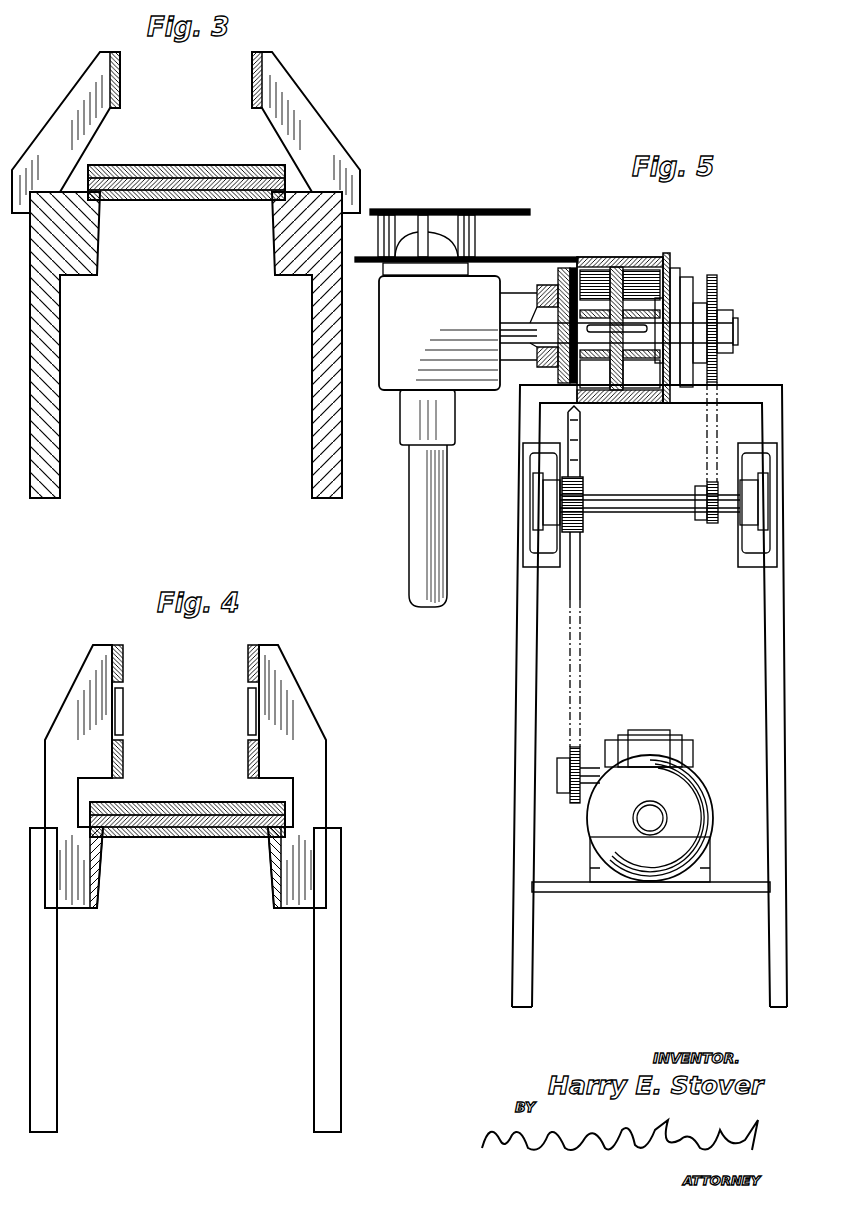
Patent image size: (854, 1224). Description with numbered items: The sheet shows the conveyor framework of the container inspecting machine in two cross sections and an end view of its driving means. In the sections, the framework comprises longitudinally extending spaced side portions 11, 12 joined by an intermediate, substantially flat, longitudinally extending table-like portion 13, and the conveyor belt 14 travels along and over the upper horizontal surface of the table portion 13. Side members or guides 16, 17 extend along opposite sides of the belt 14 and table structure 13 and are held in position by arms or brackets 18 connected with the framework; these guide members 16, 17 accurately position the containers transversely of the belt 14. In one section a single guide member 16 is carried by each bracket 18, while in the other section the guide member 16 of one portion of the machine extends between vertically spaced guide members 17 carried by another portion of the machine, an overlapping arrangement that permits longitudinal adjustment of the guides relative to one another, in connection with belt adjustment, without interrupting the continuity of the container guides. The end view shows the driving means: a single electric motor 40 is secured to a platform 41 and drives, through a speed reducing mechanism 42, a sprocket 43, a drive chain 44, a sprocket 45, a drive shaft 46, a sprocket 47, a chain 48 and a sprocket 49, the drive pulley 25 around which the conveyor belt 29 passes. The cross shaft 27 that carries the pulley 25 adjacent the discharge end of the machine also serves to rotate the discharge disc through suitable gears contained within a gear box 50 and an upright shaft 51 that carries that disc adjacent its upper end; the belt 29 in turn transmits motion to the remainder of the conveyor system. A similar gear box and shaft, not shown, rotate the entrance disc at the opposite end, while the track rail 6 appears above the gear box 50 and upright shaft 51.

In FIG. 5, the track rail 6 is at (518, 247).
In FIG. 3, the side portion 11 is at (317, 374).
In FIG. 4, the side portion 11 is at (333, 961).
In FIG. 3, the side portion 12 is at (47, 444).
In FIG. 4, the side portion 12 is at (45, 989).
In FIG. 3, the table-like portion 13 is at (168, 214).
In FIG. 4, the table-like portion 13 is at (185, 848).
In FIG. 3, the conveyor belt 14 is at (138, 150).
In FIG. 4, the conveyor belt 14 is at (187, 787).
In FIG. 3, the guide member 16 is at (122, 80).
In FIG. 4, the guide member 16 is at (123, 712).
In FIG. 4, the guide member 17 is at (123, 668).
In FIG. 3, the bracket 18 is at (60, 107).
In FIG. 4, the bracket 18 is at (58, 722).
In FIG. 5, the drive pulley 25 is at (665, 253).
In FIG. 5, the cross shaft 27 is at (738, 328).
In FIG. 5, the conveyor belt 29 is at (597, 258).
In FIG. 5, the electric motor 40 is at (690, 802).
In FIG. 5, the platform 41 is at (570, 892).
In FIG. 5, the speed reducing mechanism 42 is at (623, 733).
In FIG. 5, the sprocket 43 is at (572, 803).
In FIG. 5, the drive chain 44 is at (580, 680).
In FIG. 5, the sprocket 45 is at (582, 553).
In FIG. 5, the drive shaft 46 is at (637, 513).
In FIG. 5, the sprocket 47 is at (710, 528).
In FIG. 5, the chain 48 is at (707, 430).
In FIG. 5, the sprocket 49 is at (717, 285).
In FIG. 5, the gear box 50 is at (439, 326).
In FIG. 5, the upright shaft 51 is at (412, 500).